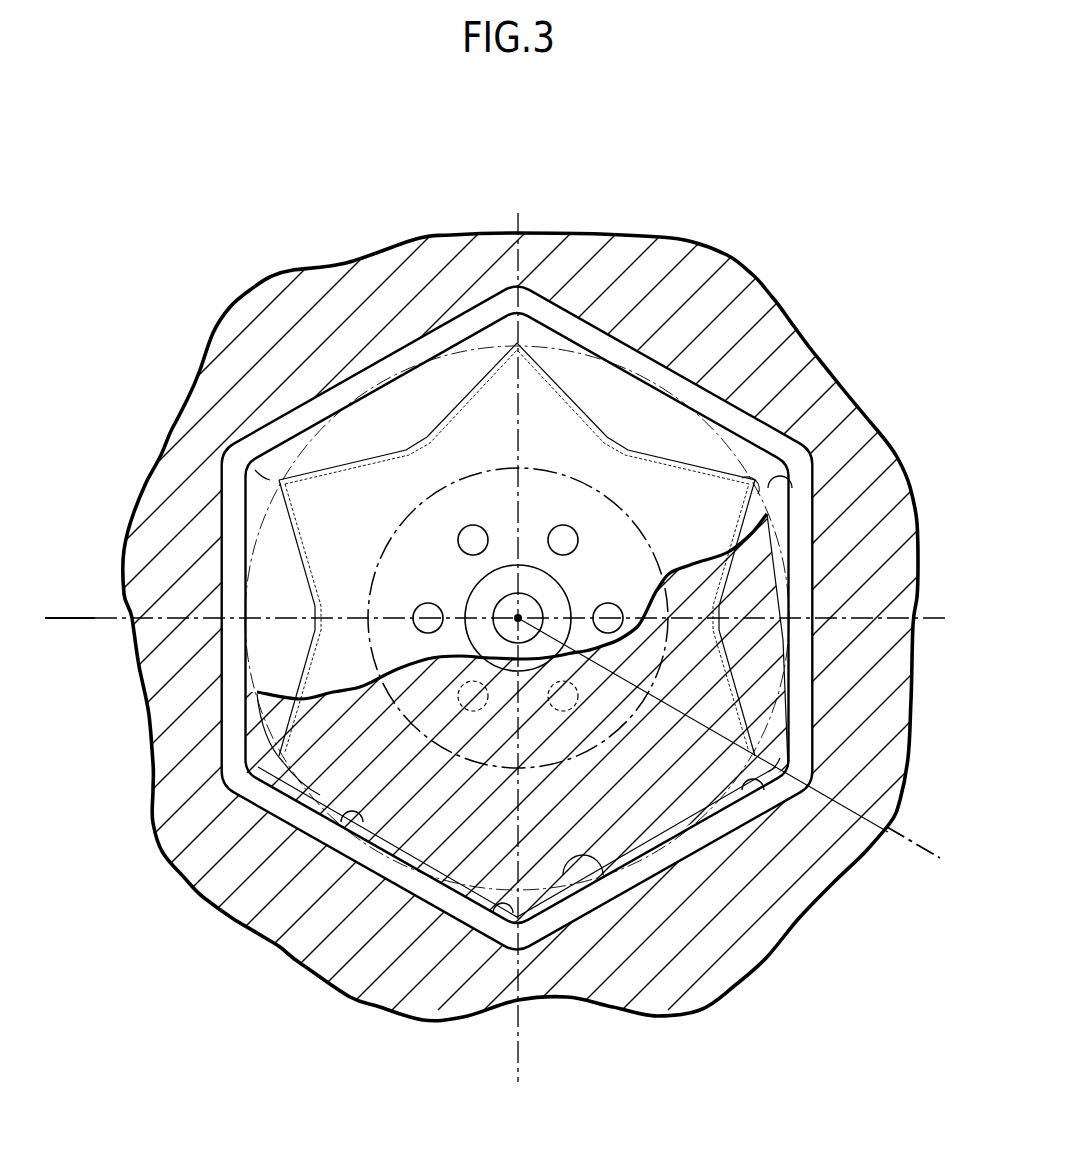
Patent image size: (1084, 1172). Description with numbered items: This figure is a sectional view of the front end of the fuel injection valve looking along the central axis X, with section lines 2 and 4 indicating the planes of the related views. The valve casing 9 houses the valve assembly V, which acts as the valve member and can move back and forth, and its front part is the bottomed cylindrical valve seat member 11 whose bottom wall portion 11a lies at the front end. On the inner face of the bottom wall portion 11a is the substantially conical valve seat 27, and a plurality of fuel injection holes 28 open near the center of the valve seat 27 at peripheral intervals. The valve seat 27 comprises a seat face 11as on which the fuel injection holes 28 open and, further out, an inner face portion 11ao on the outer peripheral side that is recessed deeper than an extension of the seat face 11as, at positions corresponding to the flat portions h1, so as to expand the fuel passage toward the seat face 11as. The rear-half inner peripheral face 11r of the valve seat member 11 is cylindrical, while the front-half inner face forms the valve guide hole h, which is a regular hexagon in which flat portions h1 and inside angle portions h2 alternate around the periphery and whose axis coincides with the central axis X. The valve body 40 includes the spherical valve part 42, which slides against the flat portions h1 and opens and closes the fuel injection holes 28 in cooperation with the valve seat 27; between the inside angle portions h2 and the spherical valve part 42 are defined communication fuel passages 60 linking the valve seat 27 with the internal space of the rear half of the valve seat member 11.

The valve casing 9 is at (719, 289).
The valve seat member 11 is at (311, 978).
The bottom wall portion 11a is at (666, 429).
The inner face portion on the outer peripheral side 11ao is at (602, 386).
The seat face 11as is at (395, 498).
The rear-half inner peripheral face 11r is at (384, 372).
The valve seat 27 is at (491, 457).
The fuel injection holes 28 is at (565, 540).
The central axis X is at (517, 616).
The valve part 42 is at (299, 790).
The valve body 40 is at (542, 617).
The valve assembly V is at (542, 617).
The communication fuel passages 60 is at (258, 732).
The valve guide hole h is at (386, 846).
The flat portions h1 is at (313, 433).
The inside angle portions h2 is at (787, 500).
The section line 2 is at (50, 620).
The section line 4 is at (174, 551).